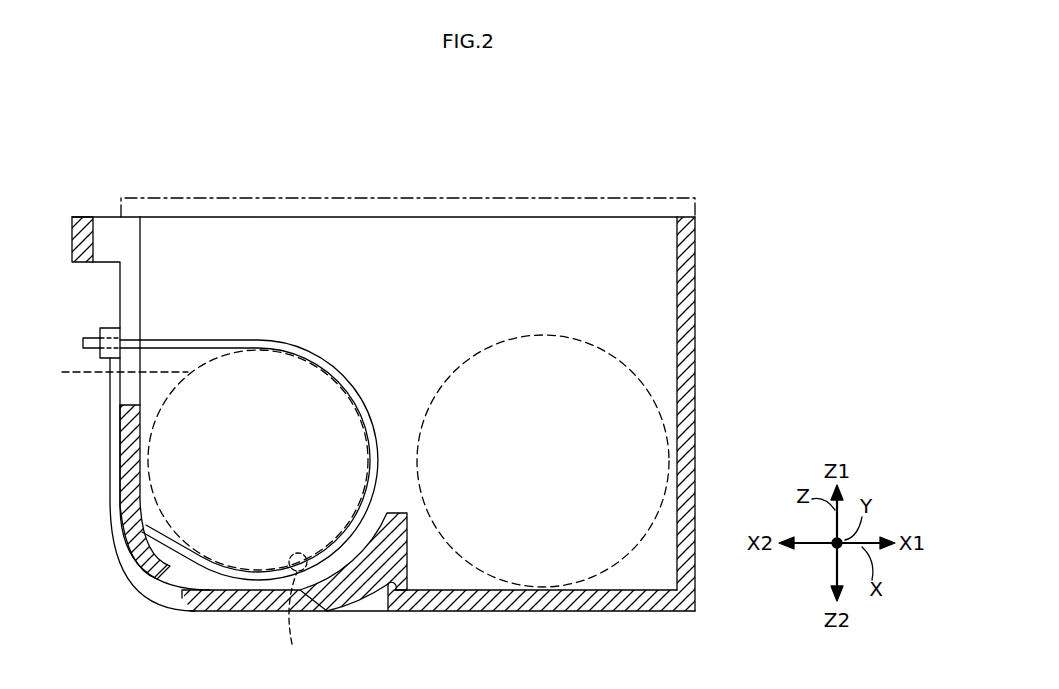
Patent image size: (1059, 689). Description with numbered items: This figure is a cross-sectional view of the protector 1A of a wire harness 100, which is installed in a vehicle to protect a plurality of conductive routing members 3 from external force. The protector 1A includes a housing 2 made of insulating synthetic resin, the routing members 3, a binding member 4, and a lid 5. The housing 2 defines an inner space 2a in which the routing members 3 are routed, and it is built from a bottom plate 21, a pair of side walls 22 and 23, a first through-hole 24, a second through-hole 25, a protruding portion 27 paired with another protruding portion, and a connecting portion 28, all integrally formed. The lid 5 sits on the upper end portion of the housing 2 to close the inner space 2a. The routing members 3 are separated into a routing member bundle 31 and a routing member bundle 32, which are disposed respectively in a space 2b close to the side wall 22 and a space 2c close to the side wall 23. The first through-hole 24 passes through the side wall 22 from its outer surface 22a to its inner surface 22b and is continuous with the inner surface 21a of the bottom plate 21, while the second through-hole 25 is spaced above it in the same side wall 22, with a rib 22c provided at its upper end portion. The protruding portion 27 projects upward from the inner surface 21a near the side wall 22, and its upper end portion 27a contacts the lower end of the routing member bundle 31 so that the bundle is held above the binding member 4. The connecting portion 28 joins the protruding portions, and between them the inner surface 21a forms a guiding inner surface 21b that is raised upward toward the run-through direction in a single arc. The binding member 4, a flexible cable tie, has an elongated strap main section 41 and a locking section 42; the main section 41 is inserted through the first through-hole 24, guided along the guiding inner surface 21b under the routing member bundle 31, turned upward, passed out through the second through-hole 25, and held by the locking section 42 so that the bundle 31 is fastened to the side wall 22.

The wire harness 100 is at (113, 146).
The protector 1A is at (91, 201).
The housing 2 is at (634, 178).
The inner space 2a is at (560, 235).
The space 2b is at (170, 331).
The space 2c is at (660, 580).
The routing members 3 is at (483, 357).
The binding member 4 is at (299, 348).
The lid 5 is at (473, 197).
The bottom plate 21 is at (525, 597).
The inner surface 21a is at (447, 586).
The guiding inner surface 21b is at (370, 553).
The side wall 22 is at (122, 515).
The outer surface 22a is at (122, 480).
The inner surface 22b is at (145, 447).
The rib 22c is at (72, 243).
The side wall 23 is at (690, 412).
The first through-hole 24 is at (167, 594).
The second through-hole 25 is at (127, 282).
The protruding portion 27 is at (338, 568).
The upper end portion 27a is at (292, 621).
The connecting portion 28 is at (395, 511).
The routing member bundle 31 is at (110, 371).
The routing member bundle 32 is at (640, 365).
The main section 41 is at (110, 393).
The locking section 42 is at (83, 343).